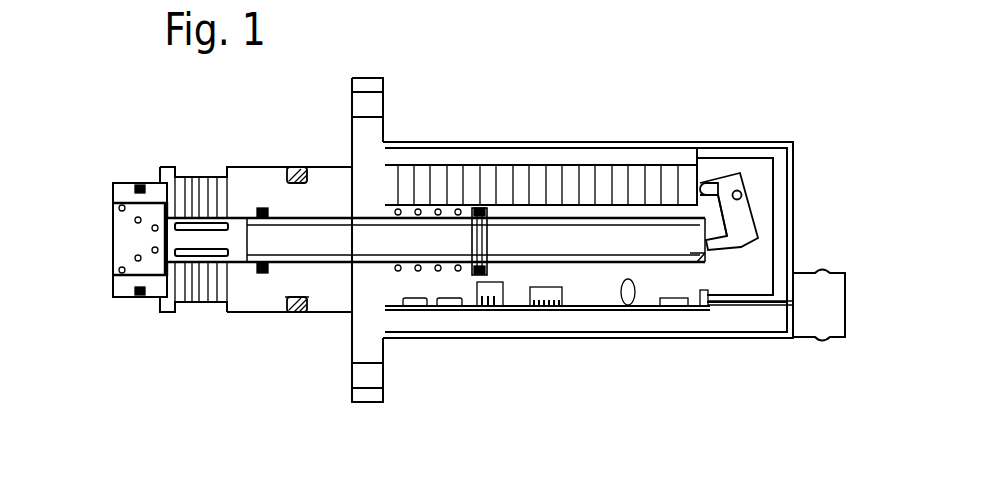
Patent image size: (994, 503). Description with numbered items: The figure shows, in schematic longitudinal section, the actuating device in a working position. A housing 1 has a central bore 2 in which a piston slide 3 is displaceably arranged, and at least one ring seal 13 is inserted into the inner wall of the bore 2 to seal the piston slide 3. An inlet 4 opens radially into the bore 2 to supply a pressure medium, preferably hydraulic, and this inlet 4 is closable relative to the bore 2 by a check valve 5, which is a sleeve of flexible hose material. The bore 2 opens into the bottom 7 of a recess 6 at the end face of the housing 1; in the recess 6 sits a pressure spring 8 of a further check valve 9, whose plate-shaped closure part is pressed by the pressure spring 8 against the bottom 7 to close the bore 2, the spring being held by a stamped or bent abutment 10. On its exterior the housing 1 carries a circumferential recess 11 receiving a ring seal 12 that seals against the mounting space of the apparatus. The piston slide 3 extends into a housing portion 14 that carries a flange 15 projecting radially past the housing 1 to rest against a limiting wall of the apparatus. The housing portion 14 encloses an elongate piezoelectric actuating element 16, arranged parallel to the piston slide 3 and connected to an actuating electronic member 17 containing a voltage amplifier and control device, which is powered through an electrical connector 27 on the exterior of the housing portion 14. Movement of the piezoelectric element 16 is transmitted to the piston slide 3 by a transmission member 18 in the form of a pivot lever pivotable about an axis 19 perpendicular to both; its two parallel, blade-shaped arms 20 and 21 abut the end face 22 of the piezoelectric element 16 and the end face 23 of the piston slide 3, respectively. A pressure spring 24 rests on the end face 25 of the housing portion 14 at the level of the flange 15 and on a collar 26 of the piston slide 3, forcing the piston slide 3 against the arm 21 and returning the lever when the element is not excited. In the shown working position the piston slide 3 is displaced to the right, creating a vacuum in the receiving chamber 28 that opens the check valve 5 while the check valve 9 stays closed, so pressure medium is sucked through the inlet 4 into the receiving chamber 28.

The housing 1 is at (259, 183).
The central bore 2 is at (276, 262).
The piston slide 3 is at (335, 233).
The inlet 4 is at (208, 302).
The check valve 5 is at (205, 217).
The recess 6 is at (118, 242).
The bottom 7 is at (148, 297).
The pressure spring 8 is at (122, 203).
The check valve 9 is at (157, 185).
The abutment 10 is at (120, 208).
The circumferential recess 11 is at (308, 310).
The ring seal 12 is at (298, 313).
The ring seal 13 is at (258, 273).
The housing portion 14 is at (470, 340).
The flange 15 is at (378, 372).
The actuating element 16 is at (442, 185).
The actuating electronic member 17 is at (650, 307).
The transmission member 18 is at (727, 178).
The axis 19 is at (738, 192).
The arm 20 is at (725, 182).
The arm 21 is at (720, 240).
The end face 22 is at (708, 185).
The end face 23 is at (703, 243).
The pressure spring 24 is at (453, 210).
The end face 25 is at (367, 322).
The collar 26 is at (480, 207).
The electrical connector 27 is at (823, 293).
The receiving chamber 28 is at (192, 244).